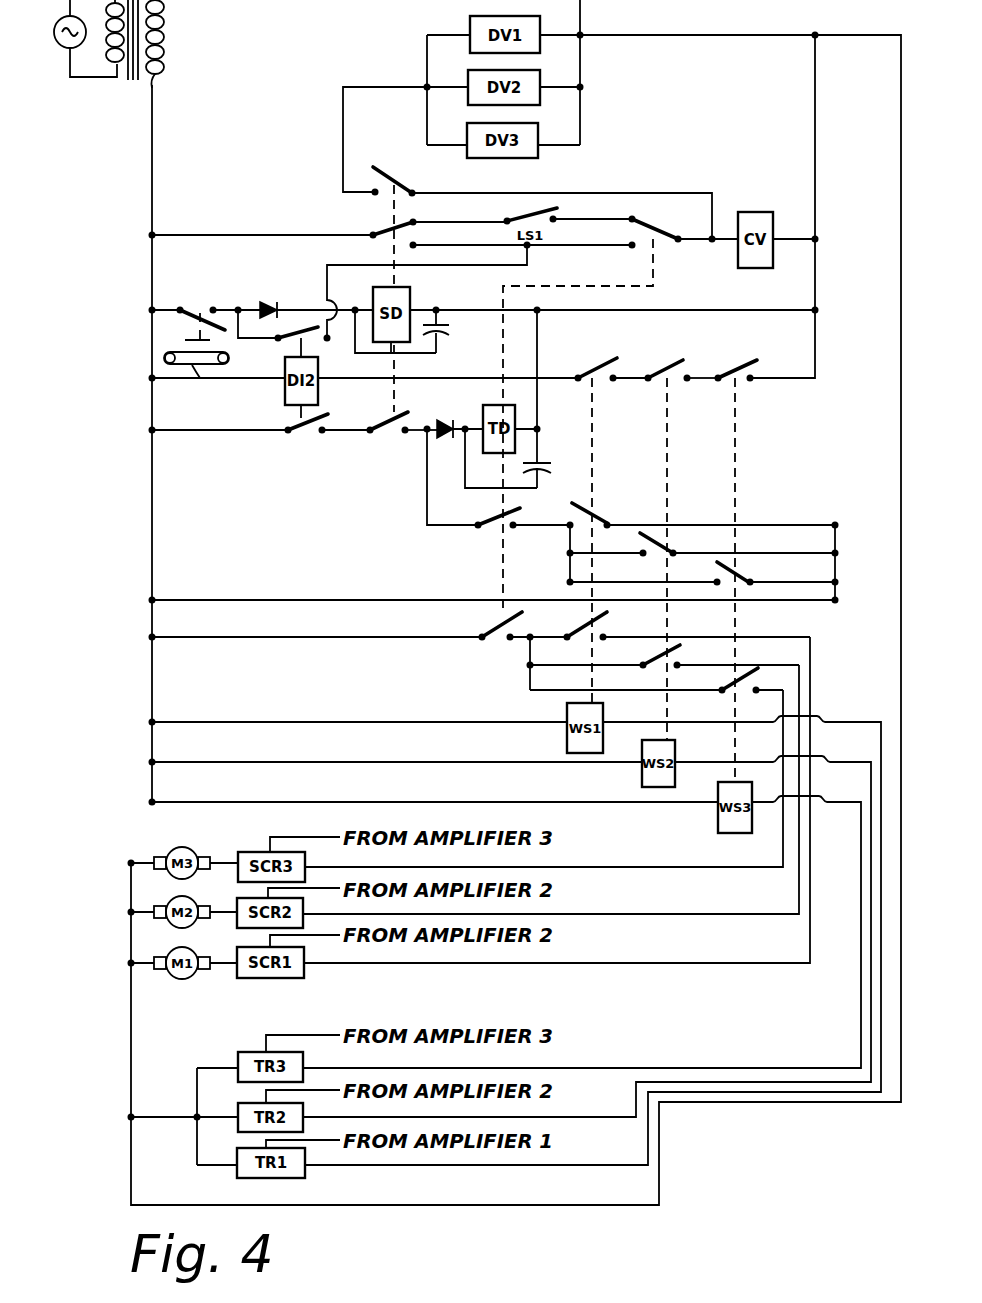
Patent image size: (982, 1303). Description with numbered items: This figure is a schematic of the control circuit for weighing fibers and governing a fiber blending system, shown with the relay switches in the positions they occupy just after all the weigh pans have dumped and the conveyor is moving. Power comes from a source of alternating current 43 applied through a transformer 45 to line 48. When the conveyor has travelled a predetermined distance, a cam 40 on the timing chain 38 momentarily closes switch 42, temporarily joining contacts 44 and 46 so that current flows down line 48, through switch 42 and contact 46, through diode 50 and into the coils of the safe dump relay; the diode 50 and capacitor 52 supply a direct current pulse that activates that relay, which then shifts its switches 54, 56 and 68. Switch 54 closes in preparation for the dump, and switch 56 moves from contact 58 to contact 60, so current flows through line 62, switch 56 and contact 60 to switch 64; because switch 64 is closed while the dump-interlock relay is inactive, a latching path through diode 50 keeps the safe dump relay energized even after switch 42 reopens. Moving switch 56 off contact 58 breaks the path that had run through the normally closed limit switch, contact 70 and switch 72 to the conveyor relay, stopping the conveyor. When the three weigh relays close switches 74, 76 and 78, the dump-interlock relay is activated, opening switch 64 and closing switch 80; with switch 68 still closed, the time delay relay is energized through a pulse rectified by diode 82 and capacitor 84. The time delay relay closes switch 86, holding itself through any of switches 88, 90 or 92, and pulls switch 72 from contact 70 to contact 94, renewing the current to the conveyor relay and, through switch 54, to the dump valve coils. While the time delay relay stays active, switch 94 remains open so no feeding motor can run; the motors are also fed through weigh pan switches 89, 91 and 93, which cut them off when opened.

The timing chain 38 is at (163, 353).
The cam 40 is at (200, 380).
The switch 42 is at (197, 320).
The source of alternating current 43 is at (62, 50).
The contact 44 is at (185, 302).
The transformer 45 is at (180, 30).
The contact 46 is at (215, 305).
The line 48 is at (150, 200).
The diode 50 is at (265, 302).
The capacitor 52 is at (449, 329).
The switch 54 is at (405, 186).
The switch 56 is at (372, 229).
The contact 58 is at (490, 218).
The contact 60 is at (437, 243).
The line 62 is at (231, 233).
The switch 64 is at (280, 343).
The switch 68 is at (384, 415).
The contact 70 is at (614, 218).
The switch 72 is at (665, 230).
The switch 74 is at (598, 356).
The switch 76 is at (676, 357).
The switch 78 is at (746, 357).
The switch 80 is at (309, 435).
The diode 82 is at (445, 418).
The capacitor 84 is at (552, 468).
The switch 86 is at (489, 530).
The switch 88 is at (595, 515).
The weigh pan switch 89 is at (606, 622).
The switch 90 is at (655, 540).
The weigh pan switch 91 is at (672, 652).
The switch 92 is at (735, 570).
The weigh pan switch 93 is at (748, 662).
The contact 94 is at (617, 246).